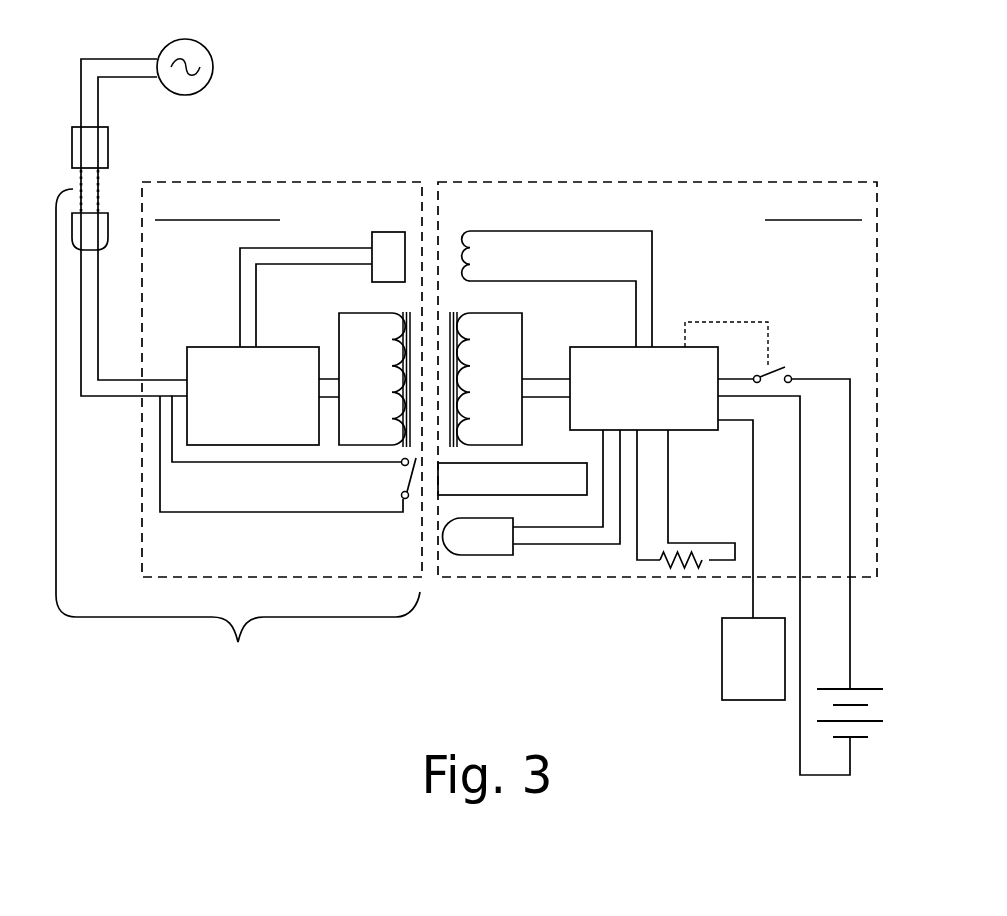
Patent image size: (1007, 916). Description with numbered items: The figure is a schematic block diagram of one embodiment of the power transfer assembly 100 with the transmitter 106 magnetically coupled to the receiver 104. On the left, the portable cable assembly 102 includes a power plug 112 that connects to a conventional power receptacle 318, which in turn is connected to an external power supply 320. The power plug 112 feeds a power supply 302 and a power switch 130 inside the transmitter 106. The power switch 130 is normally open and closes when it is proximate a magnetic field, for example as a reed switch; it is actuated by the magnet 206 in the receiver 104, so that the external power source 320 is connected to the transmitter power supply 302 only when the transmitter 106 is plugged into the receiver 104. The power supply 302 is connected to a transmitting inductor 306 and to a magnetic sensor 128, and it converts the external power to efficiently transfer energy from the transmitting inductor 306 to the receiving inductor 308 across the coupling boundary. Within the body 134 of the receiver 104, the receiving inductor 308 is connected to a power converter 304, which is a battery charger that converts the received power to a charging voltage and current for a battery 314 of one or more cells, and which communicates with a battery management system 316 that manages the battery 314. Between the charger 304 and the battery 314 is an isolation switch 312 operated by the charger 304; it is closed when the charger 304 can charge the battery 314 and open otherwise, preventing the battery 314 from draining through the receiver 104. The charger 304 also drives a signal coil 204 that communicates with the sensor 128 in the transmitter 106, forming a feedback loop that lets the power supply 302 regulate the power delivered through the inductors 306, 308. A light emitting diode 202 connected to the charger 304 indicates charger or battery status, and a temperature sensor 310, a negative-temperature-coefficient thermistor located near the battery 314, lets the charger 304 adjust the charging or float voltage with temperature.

The power transfer assembly 100 is at (805, 110).
The portable cable assembly 102 is at (238, 432).
The receiver 104 is at (654, 628).
The transmitter 106 is at (276, 182).
The power plug 112 is at (108, 232).
The magnetic sensor S 128 is at (386, 232).
The power switch 130 is at (405, 478).
The body 134 is at (606, 182).
The light emitting diode (LED) 202 is at (480, 555).
The signal coil X3 204 is at (472, 231).
The magnet 206 is at (550, 495).
The power supply 302 is at (224, 347).
The power converter 304 is at (663, 347).
The transmitting inductor X1 306 is at (390, 335).
The receiving inductor X2 308 is at (470, 337).
The temperature sensor Rt 310 is at (698, 553).
The isolation switch SW2 312 is at (783, 367).
The battery 314 is at (862, 686).
The battery management system 316 is at (753, 700).
The power receptacle 318 is at (108, 148).
The external power supply 320 is at (214, 65).